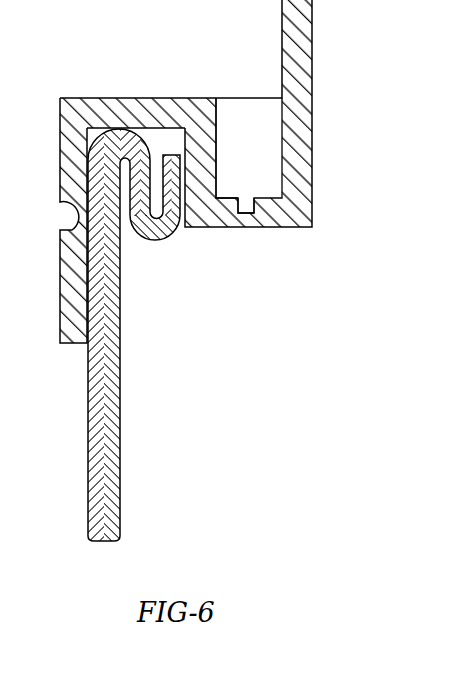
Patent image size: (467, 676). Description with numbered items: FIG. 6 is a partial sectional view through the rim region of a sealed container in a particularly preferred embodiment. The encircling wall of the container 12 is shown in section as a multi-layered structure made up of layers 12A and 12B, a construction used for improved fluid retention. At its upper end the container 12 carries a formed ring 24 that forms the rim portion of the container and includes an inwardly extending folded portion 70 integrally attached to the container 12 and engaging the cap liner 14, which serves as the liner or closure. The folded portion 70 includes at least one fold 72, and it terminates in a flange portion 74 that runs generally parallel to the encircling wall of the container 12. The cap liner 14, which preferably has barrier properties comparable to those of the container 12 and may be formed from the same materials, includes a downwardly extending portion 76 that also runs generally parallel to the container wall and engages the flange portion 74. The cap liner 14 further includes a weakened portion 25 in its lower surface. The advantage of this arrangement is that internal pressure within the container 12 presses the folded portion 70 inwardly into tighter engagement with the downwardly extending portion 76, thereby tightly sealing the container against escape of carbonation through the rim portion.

The container 12 is at (127, 304).
The layer of container 12A is at (90, 430).
The layer of container 12B is at (125, 413).
The cap liner 14 is at (179, 171).
The formed ring 24 is at (154, 260).
The weakened portion 25 is at (249, 207).
The inwardly extending folded portion 70 is at (171, 174).
The fold 72 is at (140, 213).
The flange portion 74 is at (173, 154).
The downwardly extending portion 76 is at (202, 134).